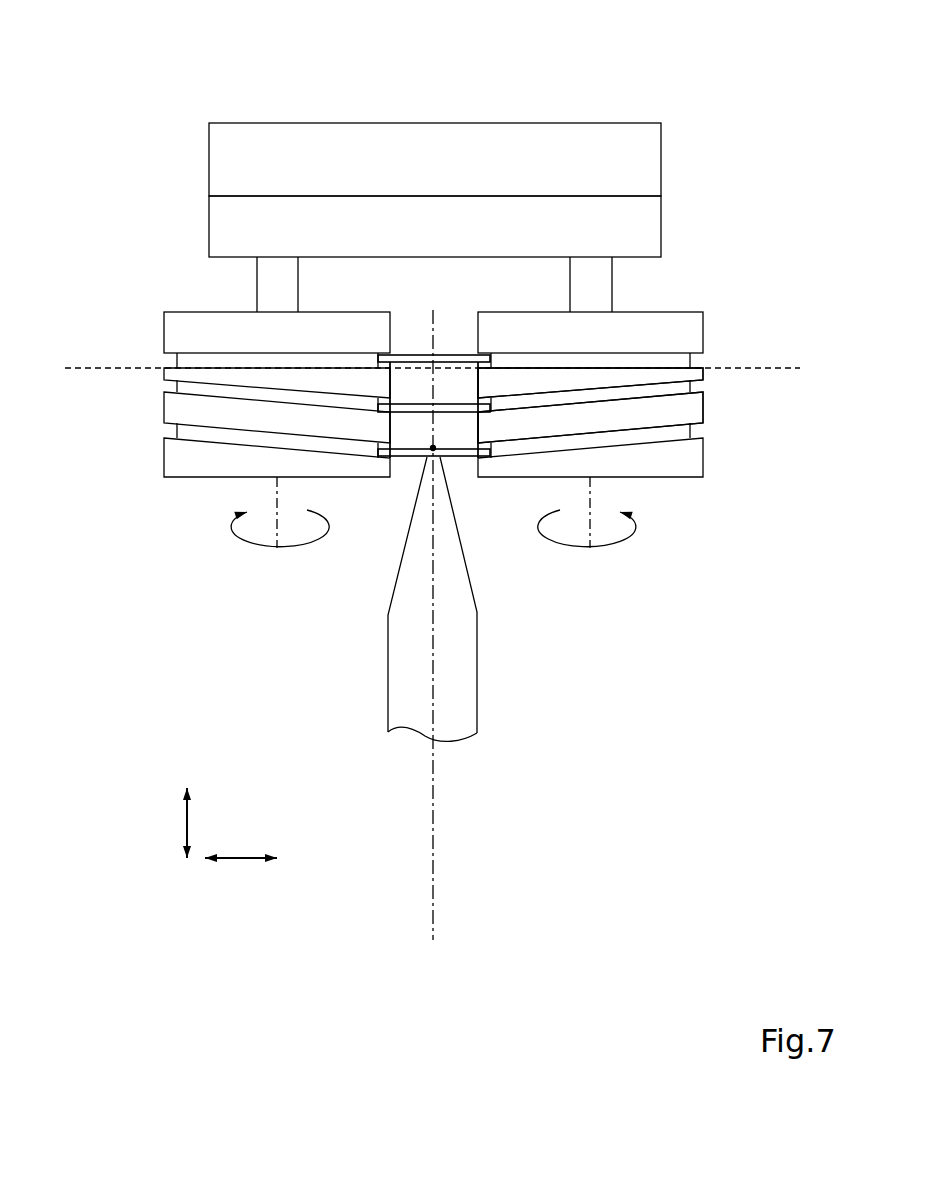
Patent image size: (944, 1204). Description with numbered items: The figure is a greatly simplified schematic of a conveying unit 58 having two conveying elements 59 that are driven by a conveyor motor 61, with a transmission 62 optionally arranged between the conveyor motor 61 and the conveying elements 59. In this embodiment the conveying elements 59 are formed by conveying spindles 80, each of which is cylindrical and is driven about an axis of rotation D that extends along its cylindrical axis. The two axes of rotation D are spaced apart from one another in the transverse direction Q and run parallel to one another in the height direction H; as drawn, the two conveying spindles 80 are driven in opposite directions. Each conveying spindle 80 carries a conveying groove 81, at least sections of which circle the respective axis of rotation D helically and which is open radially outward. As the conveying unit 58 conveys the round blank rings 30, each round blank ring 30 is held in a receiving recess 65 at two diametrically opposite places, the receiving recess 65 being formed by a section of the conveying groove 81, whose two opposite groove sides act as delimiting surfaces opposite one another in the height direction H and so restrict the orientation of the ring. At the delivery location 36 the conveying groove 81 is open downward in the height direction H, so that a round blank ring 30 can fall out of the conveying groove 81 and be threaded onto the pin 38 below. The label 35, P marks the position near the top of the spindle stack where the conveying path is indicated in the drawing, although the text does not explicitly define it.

The conveying unit 58 is at (710, 85).
The conveyor motor 61 is at (645, 147).
The transmission 62 is at (640, 225).
The conveying element 59 is at (158, 488).
The conveying spindle 80 is at (709, 488).
The machining position / processing point 35 is at (461, 322).
The processing point P is at (461, 322).
The receiving recess 65 is at (472, 352).
The delivery location 36 is at (407, 466).
The round blank ring 30 is at (478, 366).
The conveying groove 81 is at (697, 435).
The pin 38 is at (462, 678).
The axis of rotation D is at (277, 548).
The height direction H is at (187, 812).
The transverse direction Q is at (243, 858).